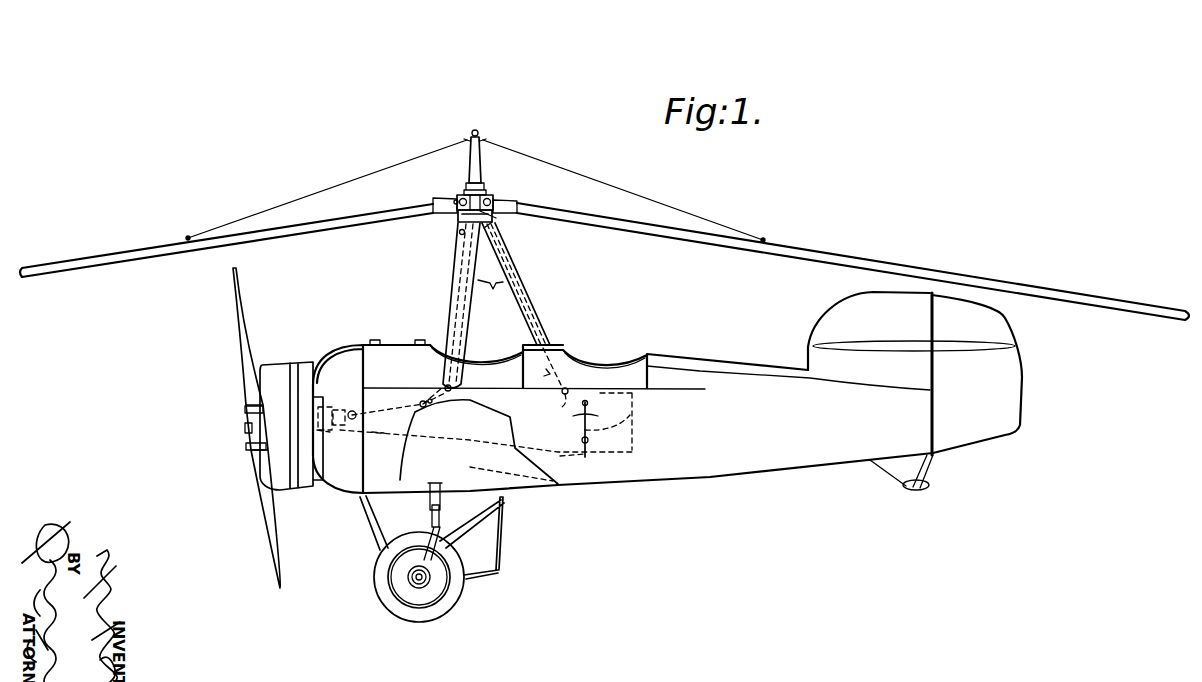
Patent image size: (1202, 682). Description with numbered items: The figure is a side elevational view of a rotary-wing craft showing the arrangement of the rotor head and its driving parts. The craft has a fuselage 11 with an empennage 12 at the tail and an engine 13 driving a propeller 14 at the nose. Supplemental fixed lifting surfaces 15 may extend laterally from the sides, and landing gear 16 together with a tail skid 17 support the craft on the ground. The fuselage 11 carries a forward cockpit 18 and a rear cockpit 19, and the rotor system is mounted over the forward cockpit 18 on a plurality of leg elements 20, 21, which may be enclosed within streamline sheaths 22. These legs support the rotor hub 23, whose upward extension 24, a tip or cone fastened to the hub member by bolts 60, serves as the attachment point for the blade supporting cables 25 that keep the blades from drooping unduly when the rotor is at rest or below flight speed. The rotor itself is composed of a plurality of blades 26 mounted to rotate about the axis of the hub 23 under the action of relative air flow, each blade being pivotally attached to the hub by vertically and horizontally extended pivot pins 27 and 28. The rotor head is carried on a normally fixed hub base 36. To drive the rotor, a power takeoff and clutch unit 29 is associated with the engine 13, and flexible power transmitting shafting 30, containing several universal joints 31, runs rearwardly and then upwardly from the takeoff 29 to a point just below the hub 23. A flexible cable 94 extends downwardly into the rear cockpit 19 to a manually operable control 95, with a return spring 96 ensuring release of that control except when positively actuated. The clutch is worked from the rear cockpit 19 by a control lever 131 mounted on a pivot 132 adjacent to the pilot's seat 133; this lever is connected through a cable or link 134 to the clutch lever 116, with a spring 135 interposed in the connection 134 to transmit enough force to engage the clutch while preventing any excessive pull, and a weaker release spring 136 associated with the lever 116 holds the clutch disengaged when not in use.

The fuselage 11 is at (702, 471).
The empennage 12 is at (915, 373).
The engine 13 is at (272, 372).
The propeller 14 is at (243, 366).
The supplemental fixed lifting surfaces 15 is at (479, 442).
The landing gear 16 is at (432, 552).
The tail skid 17 is at (919, 474).
The forward cockpit 18 is at (476, 352).
The rear cockpit 19 is at (605, 358).
The leg element 20 is at (461, 318).
The leg element 21 is at (515, 259).
The streamline sheaths 22 is at (493, 293).
The rotor hub 23 is at (488, 192).
The upward extension of the hub 24 is at (481, 160).
The blade supporting cables 25 is at (288, 200).
The rotor blades 26 is at (86, 262).
The vertical pivot pin 27 is at (460, 188).
The horizontal pivot pin 28 is at (455, 199).
The power takeoff and clutch unit 29 is at (320, 407).
The flexible power transmitting shafting 30 is at (459, 262).
The flexible or universal joints 31 is at (460, 233).
The hub base 36 is at (458, 218).
The bolts 60 is at (468, 186).
The flexible cable 94 is at (496, 218).
The manually operable control 95 is at (563, 394).
The return spring 96 is at (550, 374).
The clutch lever 116 is at (350, 418).
The control lever 131 is at (591, 413).
The pivot 132 is at (581, 439).
The pilot's seat 133 is at (640, 418).
The cable or link 134 is at (560, 456).
The spring 135 is at (378, 436).
The release or return spring 136 is at (330, 432).